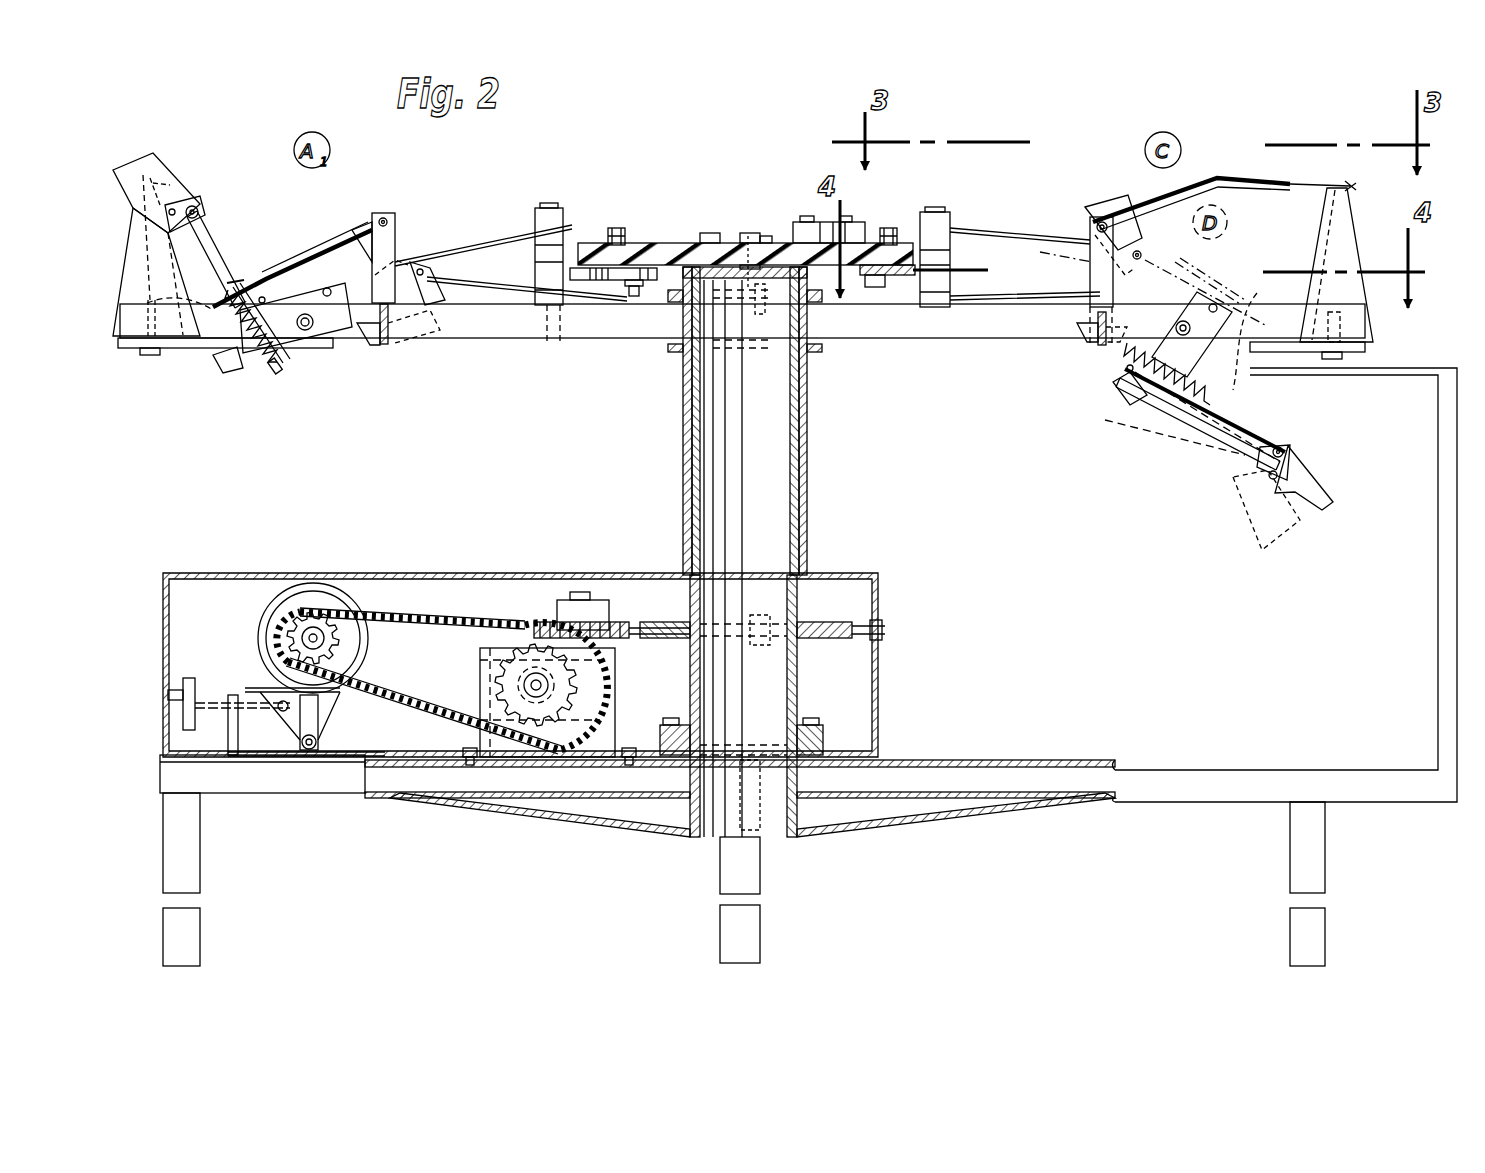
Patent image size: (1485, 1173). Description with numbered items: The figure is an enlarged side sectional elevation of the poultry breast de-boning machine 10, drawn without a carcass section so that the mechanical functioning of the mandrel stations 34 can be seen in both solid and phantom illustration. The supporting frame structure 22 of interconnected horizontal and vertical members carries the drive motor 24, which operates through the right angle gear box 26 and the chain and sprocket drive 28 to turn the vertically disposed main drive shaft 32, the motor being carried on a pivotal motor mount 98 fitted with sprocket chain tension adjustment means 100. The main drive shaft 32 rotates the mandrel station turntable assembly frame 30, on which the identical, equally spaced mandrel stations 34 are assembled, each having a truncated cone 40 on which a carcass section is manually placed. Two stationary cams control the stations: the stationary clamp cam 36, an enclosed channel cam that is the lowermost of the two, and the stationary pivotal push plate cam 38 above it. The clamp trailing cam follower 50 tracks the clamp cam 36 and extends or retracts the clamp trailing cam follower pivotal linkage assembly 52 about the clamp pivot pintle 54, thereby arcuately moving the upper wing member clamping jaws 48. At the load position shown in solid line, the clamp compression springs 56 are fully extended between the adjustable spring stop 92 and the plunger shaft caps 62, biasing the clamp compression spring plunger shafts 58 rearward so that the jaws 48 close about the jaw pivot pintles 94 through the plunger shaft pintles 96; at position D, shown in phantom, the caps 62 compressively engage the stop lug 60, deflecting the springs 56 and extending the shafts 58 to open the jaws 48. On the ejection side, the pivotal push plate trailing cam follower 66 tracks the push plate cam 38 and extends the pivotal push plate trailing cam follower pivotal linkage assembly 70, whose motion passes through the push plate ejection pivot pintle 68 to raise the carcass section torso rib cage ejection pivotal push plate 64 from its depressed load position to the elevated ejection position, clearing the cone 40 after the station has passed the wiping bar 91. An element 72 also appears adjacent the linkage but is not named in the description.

The poultry breast de-boning machine 10 is at (1117, 120).
The supporting frame structure 22 is at (203, 840).
The drive motor 24 is at (260, 625).
The right angle gear box 26 is at (608, 700).
The chain and sprocket drive 28 is at (500, 570).
The mandrel station turntable assembly frame 30 is at (458, 340).
The main drive shaft 32 is at (806, 458).
The mandrel station 34 is at (120, 135).
The stationary clamp cam 36 is at (598, 243).
The stationary pivotal push plate cam 38 is at (845, 222).
The mandrel station truncated cone 40 is at (137, 245).
The upper wing member clamping jaws 48 is at (165, 175).
The clamp trailing cam follower 50 is at (648, 243).
The clamp trailing cam follower pivotal linkage assembly 52 is at (528, 352).
The clamp pivot pintle 54 is at (305, 330).
The clamp compression springs 56 is at (262, 298).
The clamp compression spring plunger shafts 58 is at (208, 240).
The clamp compression spring plunger shaft stop lug 60 is at (372, 345).
The clamp compression spring plunger shaft caps 62 is at (275, 370).
The carcass section torso rib cage ejection pivotal push plate 64 is at (147, 303).
The pivotal push plate trailing cam follower 66 is at (605, 228).
The push plate ejection pivot pintle 68 is at (210, 308).
The pivotal push plate trailing cam follower pivotal linkage assembly 70 is at (420, 205).
The bracket 72 is at (550, 205).
The wiping bar 91 is at (1390, 368).
The adjustable spring stop 92 is at (235, 285).
The jaw pivot pintles 94 is at (180, 205).
The plunger shaft pintles 96 is at (200, 210).
The pivotal motor mount 98 is at (340, 710).
The sprocket chain tension adjustment means 100 is at (225, 680).